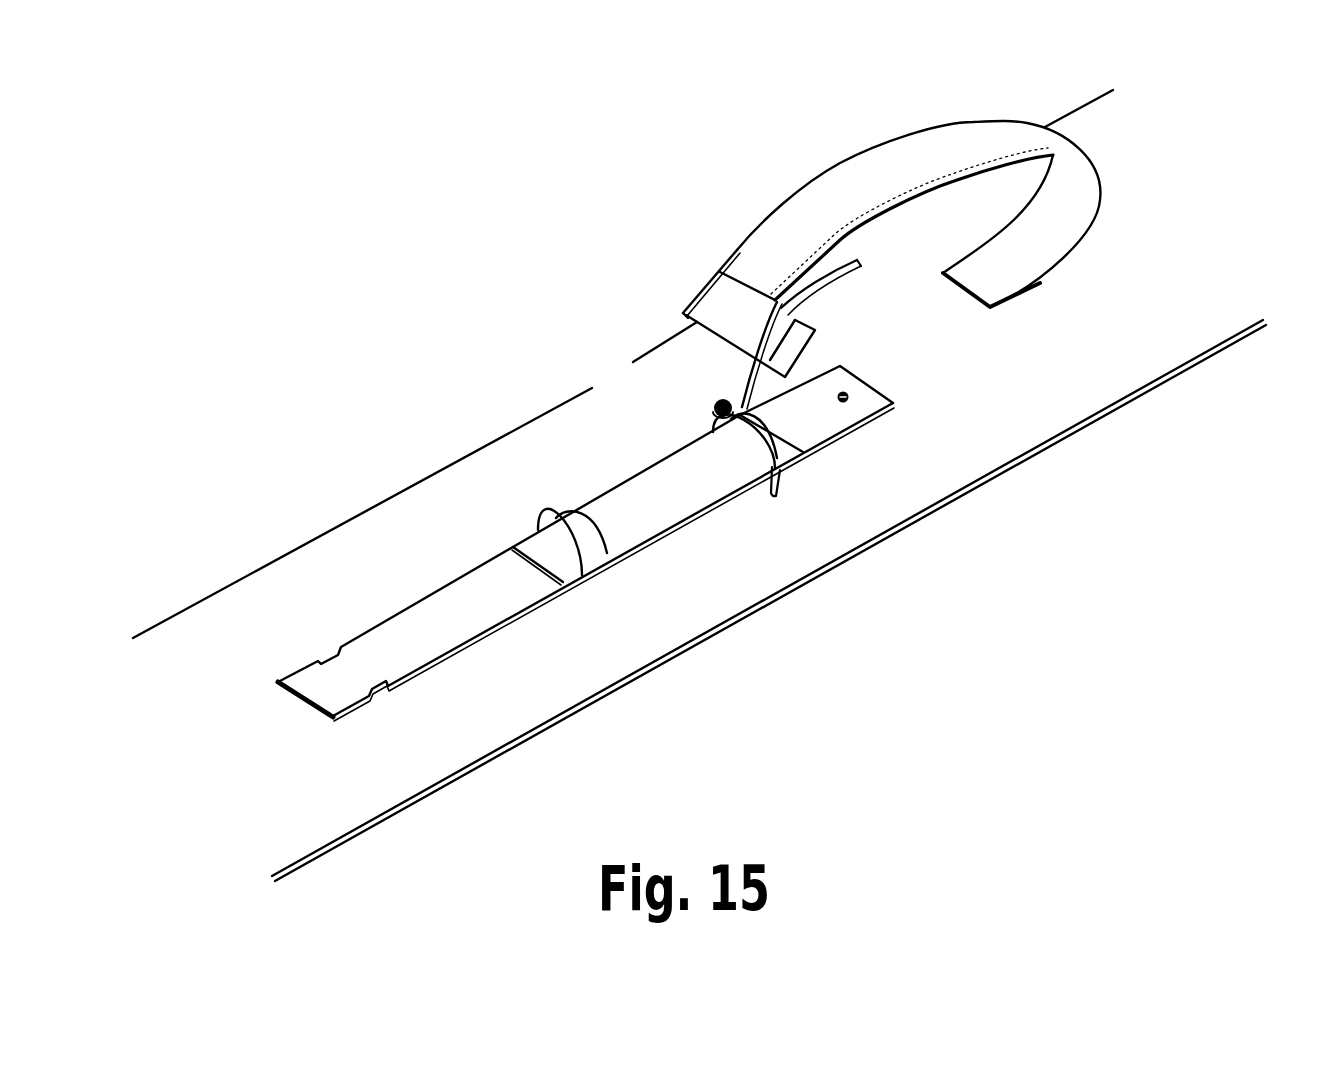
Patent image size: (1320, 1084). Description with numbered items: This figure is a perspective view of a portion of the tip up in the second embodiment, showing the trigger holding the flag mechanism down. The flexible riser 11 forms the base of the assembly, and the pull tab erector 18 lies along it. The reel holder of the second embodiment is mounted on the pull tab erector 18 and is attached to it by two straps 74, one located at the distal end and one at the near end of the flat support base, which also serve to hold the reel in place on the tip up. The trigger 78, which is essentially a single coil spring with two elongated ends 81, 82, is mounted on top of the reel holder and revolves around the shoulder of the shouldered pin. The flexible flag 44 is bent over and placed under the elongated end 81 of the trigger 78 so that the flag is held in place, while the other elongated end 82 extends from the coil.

The flexible riser 11 is at (1065, 412).
The pull tab erector 18 is at (840, 418).
The flexible flag 44 is at (783, 213).
The straps 74 is at (553, 523).
The trigger 78 is at (724, 373).
The elongated end 81 is at (858, 260).
The elongated end 82 is at (780, 494).